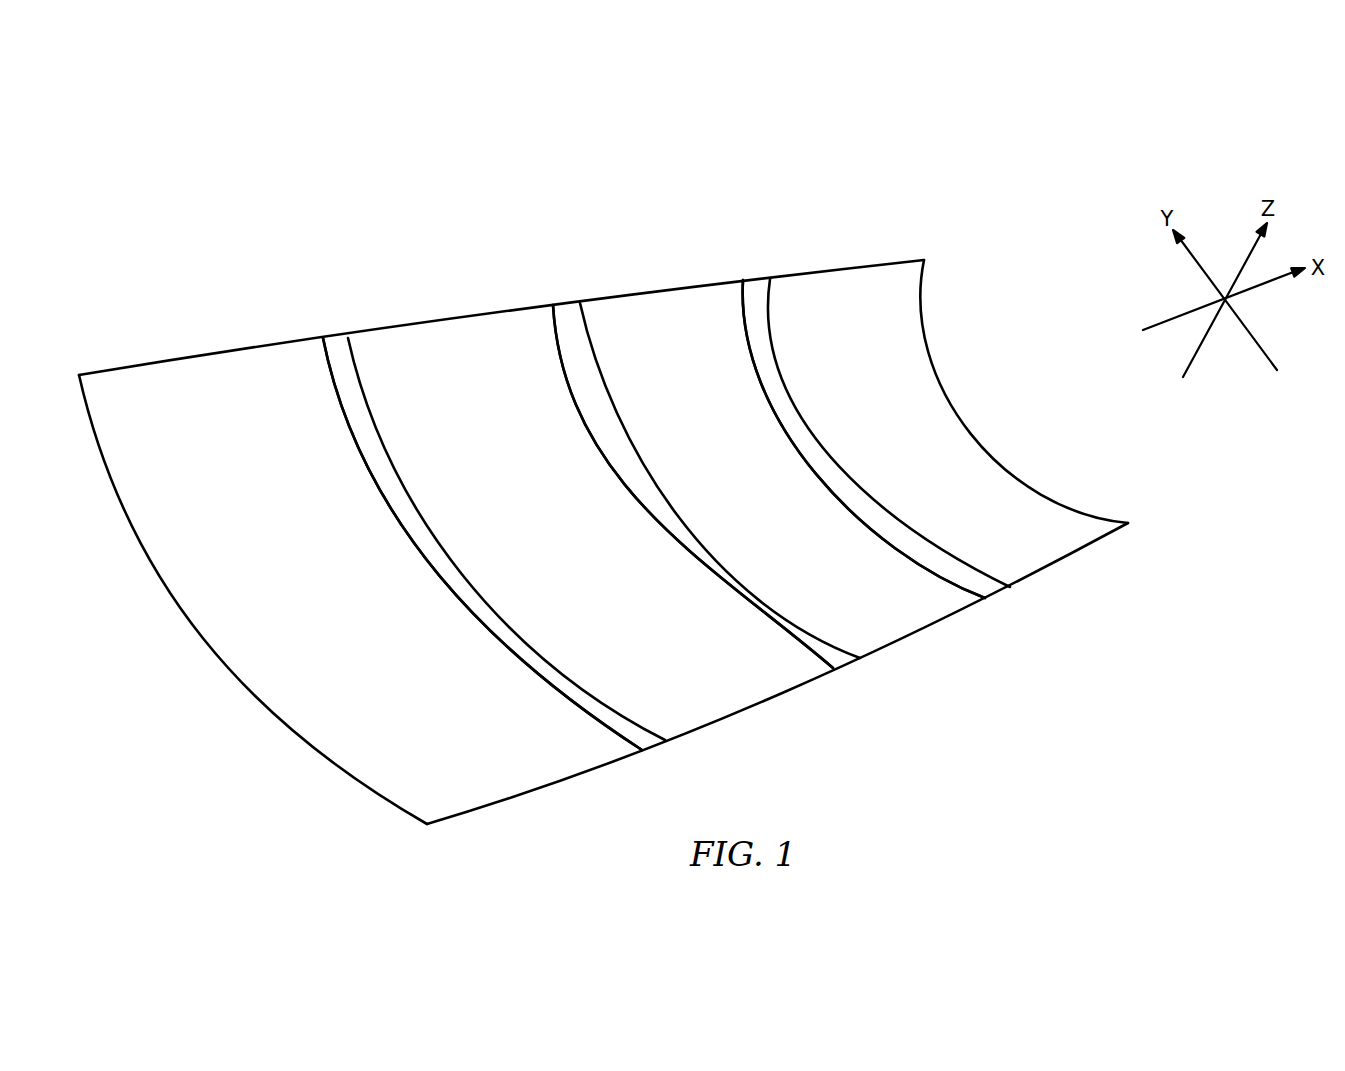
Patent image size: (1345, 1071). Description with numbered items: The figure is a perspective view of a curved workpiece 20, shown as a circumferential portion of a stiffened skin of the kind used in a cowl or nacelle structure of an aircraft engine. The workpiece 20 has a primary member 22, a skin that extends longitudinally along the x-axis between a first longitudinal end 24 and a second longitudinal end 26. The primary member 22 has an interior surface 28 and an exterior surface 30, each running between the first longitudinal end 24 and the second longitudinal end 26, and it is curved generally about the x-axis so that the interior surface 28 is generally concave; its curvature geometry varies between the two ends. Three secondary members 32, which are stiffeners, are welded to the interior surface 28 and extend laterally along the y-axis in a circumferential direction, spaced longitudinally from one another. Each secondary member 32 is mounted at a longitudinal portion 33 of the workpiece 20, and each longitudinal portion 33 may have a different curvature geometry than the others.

The workpiece 20 is at (603, 464).
The primary member 22 is at (1057, 557).
The first longitudinal end 24 is at (205, 652).
The second longitudinal end 26 is at (983, 385).
The interior surface 28 is at (898, 620).
The exterior surface 30 is at (757, 712).
The secondary member 32 is at (352, 387).
The longitudinal portion 33 is at (333, 325).